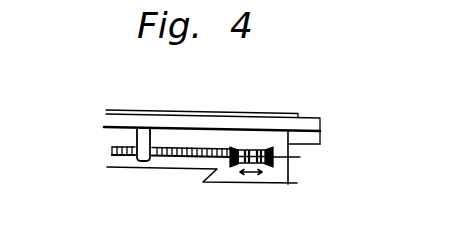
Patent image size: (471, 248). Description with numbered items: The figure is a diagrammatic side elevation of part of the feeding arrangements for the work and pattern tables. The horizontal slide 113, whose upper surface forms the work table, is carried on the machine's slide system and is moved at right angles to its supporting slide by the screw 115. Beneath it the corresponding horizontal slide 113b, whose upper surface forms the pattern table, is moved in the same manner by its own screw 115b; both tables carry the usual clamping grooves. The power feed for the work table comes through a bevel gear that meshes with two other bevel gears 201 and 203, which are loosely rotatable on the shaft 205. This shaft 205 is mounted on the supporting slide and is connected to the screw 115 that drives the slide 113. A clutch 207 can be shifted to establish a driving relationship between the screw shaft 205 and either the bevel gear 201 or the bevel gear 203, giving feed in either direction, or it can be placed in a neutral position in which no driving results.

The horizontal slide 113 is at (321, 127).
The horizontal slide 113b is at (320, 133).
The screw 115 is at (113, 150).
The screw 115b is at (113, 153).
The bevel gear 201 is at (219, 164).
The bevel gear 203 is at (238, 168).
The shaft 205 is at (256, 148).
The clutch 207 is at (260, 168).